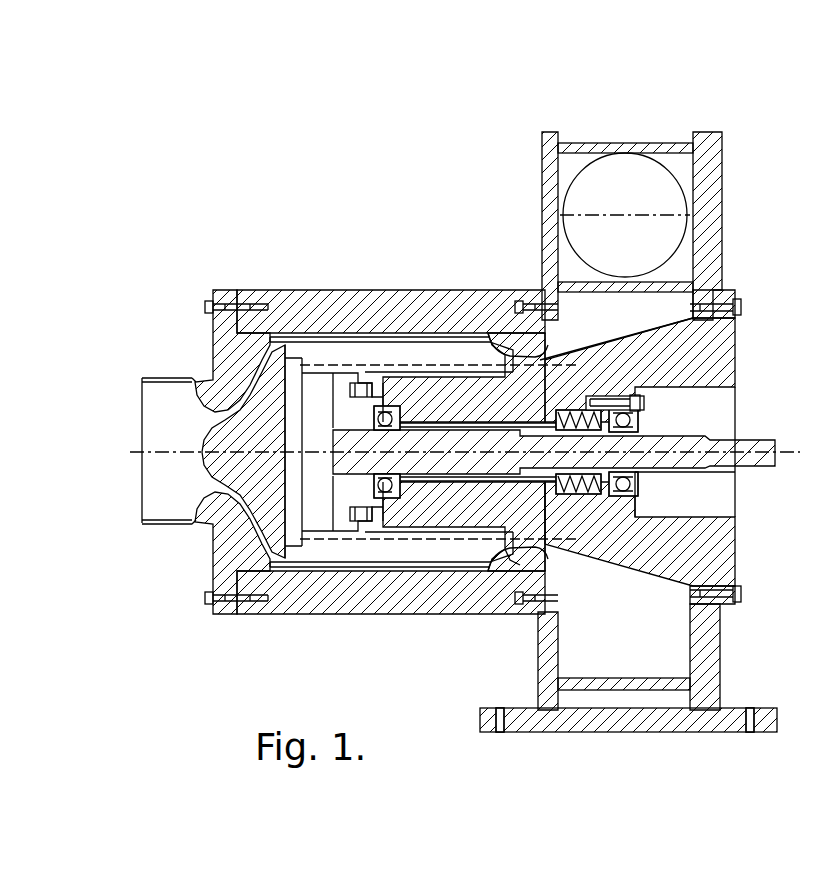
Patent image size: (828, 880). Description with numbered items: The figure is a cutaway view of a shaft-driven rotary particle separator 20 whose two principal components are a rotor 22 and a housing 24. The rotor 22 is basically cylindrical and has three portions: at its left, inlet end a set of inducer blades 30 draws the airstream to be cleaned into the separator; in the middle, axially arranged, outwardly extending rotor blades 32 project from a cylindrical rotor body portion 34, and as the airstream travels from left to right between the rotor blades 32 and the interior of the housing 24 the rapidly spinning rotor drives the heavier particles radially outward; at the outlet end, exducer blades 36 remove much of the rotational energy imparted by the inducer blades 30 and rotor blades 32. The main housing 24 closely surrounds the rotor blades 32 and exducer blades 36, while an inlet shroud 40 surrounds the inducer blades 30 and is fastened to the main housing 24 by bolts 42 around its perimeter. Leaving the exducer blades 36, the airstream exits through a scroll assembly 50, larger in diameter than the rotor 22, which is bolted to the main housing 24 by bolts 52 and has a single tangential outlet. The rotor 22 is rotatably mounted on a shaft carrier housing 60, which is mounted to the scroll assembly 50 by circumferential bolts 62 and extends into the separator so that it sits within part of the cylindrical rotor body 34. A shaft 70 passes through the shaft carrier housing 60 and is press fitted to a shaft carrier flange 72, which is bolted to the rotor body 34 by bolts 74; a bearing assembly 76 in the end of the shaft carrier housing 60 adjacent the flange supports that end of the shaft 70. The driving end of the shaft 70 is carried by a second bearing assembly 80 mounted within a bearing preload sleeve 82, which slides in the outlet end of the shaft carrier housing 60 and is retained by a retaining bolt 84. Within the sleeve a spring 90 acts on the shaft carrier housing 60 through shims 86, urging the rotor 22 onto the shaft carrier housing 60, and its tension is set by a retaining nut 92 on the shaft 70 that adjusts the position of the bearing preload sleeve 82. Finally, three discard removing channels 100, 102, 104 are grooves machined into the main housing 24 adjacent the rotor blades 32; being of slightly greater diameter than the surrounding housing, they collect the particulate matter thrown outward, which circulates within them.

The rotary particle separator 20 is at (281, 189).
The rotor 22 is at (184, 443).
The housing 24 is at (310, 300).
The inducer blades 30 is at (248, 345).
The rotor blades 32 is at (352, 342).
The cylindrical rotor body portion 34 is at (285, 545).
The exducer blades 36 is at (500, 304).
The inlet shroud 40 is at (228, 526).
The bolts 42 is at (205, 312).
The scroll assembly 50 is at (712, 135).
The bolts 52 is at (548, 300).
The shaft carrier housing 60 is at (722, 352).
The bolts 62 is at (741, 300).
The shaft 70 is at (770, 439).
The shaft carrier flange 72 is at (337, 545).
The bolts 74 is at (373, 545).
The bearing assembly 76 is at (397, 545).
The second bearing assembly 80 is at (634, 421).
The bearing preload sleeve 82 is at (582, 412).
The retaining bolt 84 is at (625, 404).
The shims 86 is at (503, 546).
The spring 90 is at (527, 577).
The retaining nut 92 is at (636, 480).
The discard removing channel 100 is at (278, 340).
The discard removing channel 102 is at (385, 345).
The discard removing channel 104 is at (462, 300).